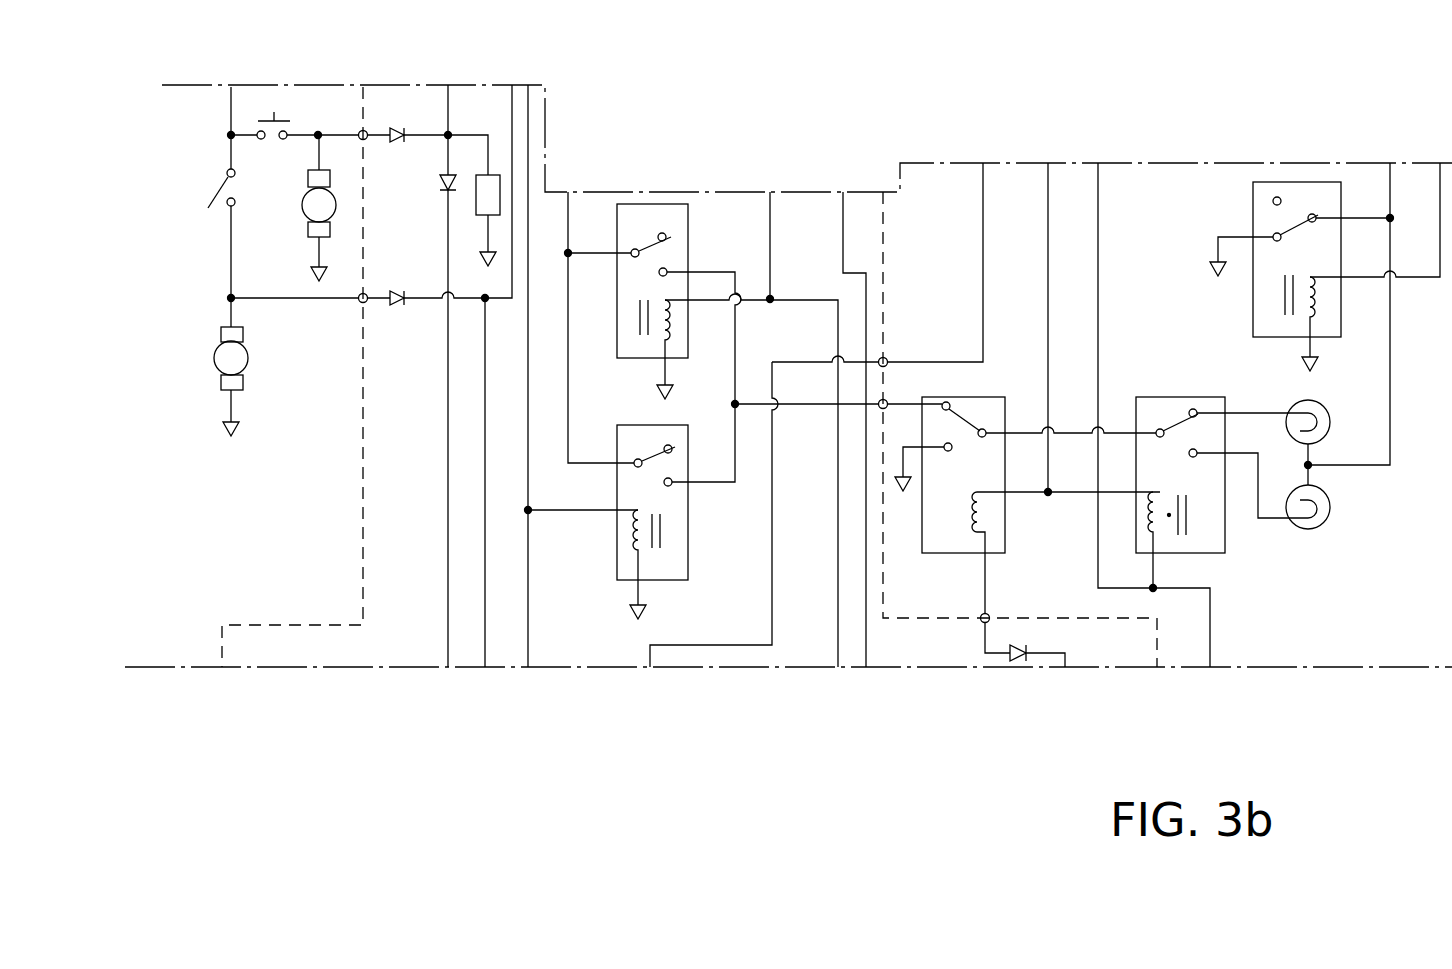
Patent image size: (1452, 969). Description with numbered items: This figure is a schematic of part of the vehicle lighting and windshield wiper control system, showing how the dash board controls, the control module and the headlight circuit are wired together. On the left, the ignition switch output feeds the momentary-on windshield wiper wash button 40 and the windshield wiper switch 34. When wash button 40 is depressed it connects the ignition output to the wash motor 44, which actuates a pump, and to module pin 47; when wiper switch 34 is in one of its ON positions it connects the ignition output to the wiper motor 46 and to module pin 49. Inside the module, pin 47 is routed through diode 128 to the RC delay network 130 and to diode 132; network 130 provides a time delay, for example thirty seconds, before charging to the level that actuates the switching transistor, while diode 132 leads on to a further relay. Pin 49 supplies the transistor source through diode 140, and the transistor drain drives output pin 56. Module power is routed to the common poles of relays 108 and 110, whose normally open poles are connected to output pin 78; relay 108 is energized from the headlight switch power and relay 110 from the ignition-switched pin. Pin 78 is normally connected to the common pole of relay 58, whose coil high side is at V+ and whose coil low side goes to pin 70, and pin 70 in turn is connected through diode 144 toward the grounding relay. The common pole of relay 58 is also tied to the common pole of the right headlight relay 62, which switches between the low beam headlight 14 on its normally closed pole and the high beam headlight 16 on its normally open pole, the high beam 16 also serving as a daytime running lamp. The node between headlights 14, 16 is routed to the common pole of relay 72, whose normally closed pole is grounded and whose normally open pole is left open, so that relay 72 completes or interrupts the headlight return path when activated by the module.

The low beam headlight 14 is at (1316, 401).
The high beam headlight 16 is at (1312, 530).
The windshield wiper switch 34 is at (208, 208).
The windshield wiper wash button 40 is at (276, 108).
The wash motor 44 is at (316, 205).
The wiper motor 46 is at (226, 358).
The module pin 47 is at (366, 130).
The module pin 49 is at (362, 302).
The output pin 56 is at (886, 357).
The relay 58 is at (1000, 397).
The right headlight relay 62 is at (1138, 397).
The module pin 70 is at (989, 613).
The relay 72 is at (1253, 192).
The module pin 78 is at (886, 400).
The relay 108 is at (690, 223).
The relay 110 is at (690, 535).
The diode 128 is at (397, 144).
The RC delay network 130 is at (490, 176).
The diode 132 is at (440, 183).
The diode 140 is at (397, 306).
The diode 144 is at (1022, 640).